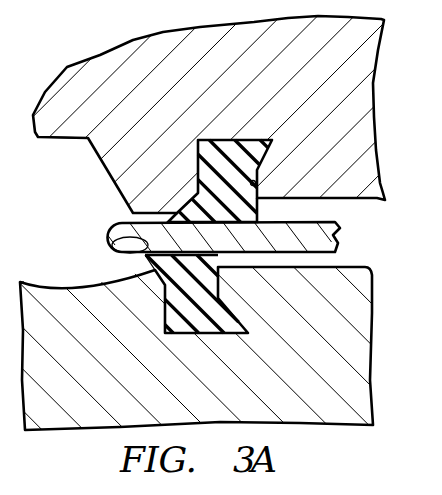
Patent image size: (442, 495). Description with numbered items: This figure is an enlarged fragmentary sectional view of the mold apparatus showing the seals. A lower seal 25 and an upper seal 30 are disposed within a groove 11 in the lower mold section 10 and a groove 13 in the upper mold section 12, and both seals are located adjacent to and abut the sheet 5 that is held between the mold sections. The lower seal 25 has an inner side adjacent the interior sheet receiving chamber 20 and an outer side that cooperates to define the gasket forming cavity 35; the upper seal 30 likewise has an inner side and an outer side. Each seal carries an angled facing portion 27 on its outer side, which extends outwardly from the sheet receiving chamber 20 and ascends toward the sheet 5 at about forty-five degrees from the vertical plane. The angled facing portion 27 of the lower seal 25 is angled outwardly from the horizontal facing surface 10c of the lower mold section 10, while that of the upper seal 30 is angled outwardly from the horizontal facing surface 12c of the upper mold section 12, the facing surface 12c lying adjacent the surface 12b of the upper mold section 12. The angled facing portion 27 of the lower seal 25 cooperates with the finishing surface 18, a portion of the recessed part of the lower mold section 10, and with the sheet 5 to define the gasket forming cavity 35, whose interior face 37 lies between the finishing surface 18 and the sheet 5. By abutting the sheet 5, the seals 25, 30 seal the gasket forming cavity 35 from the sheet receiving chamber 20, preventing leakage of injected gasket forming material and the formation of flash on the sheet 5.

The sheet 5 is at (336, 229).
The lower mold section 10 is at (315, 395).
The facing surface 10c is at (358, 265).
The groove 11 is at (163, 326).
The upper mold section 12 is at (143, 108).
The surface of second housing member 12b is at (50, 140).
The facing surface 12c is at (368, 200).
The groove 13 is at (256, 182).
The finishing surface 18 is at (31, 280).
The sheet receiving chamber 20 is at (404, 253).
The lower seal 25 is at (204, 293).
The angled facing portion 27 is at (195, 199).
The upper seal 30 is at (239, 204).
The gasket forming cavity 35 is at (64, 226).
The interior face 37 is at (113, 243).